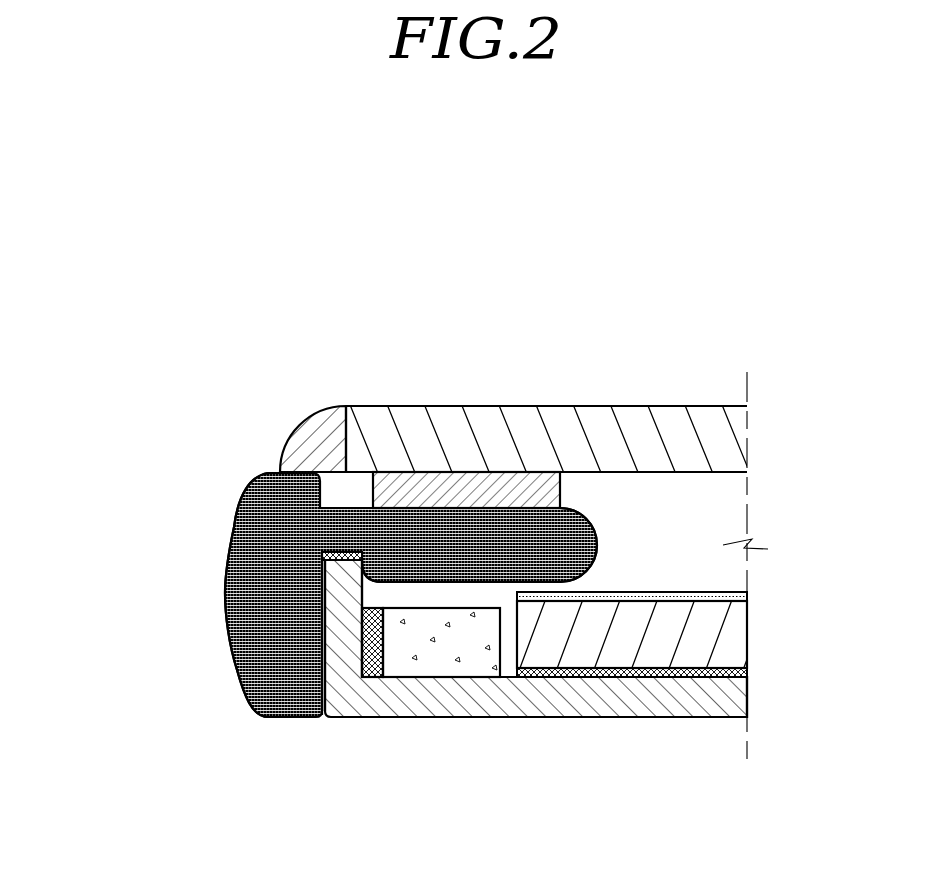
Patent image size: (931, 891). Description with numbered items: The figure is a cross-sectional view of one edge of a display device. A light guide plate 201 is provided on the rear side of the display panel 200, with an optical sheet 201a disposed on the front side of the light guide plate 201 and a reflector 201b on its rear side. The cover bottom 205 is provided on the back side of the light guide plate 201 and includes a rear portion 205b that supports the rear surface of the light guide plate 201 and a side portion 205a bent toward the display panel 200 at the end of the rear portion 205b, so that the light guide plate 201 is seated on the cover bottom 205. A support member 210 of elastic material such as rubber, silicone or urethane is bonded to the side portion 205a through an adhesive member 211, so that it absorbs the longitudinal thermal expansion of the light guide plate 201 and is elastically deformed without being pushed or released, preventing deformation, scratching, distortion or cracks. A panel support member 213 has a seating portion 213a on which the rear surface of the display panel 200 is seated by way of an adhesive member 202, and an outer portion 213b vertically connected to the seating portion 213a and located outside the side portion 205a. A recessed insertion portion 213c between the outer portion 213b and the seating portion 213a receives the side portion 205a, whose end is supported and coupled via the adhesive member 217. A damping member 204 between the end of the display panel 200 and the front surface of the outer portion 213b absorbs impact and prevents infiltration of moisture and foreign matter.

The display panel 200 is at (558, 377).
The light guide plate 201 is at (717, 635).
The optical sheet 201a is at (565, 598).
The reflector 201b is at (653, 672).
The adhesive member 202 is at (457, 480).
The damping member 204 is at (293, 433).
The cover bottom 205 is at (470, 822).
The side portion 205a is at (343, 647).
The rear portion 205b is at (387, 692).
The support member 210 is at (453, 650).
The adhesive member 211 is at (380, 650).
The panel support member 213 is at (123, 640).
The seating portion 213a is at (405, 560).
The outer portion 213b is at (250, 627).
The insertion portion 213c is at (333, 552).
The adhesive member 217 is at (322, 557).